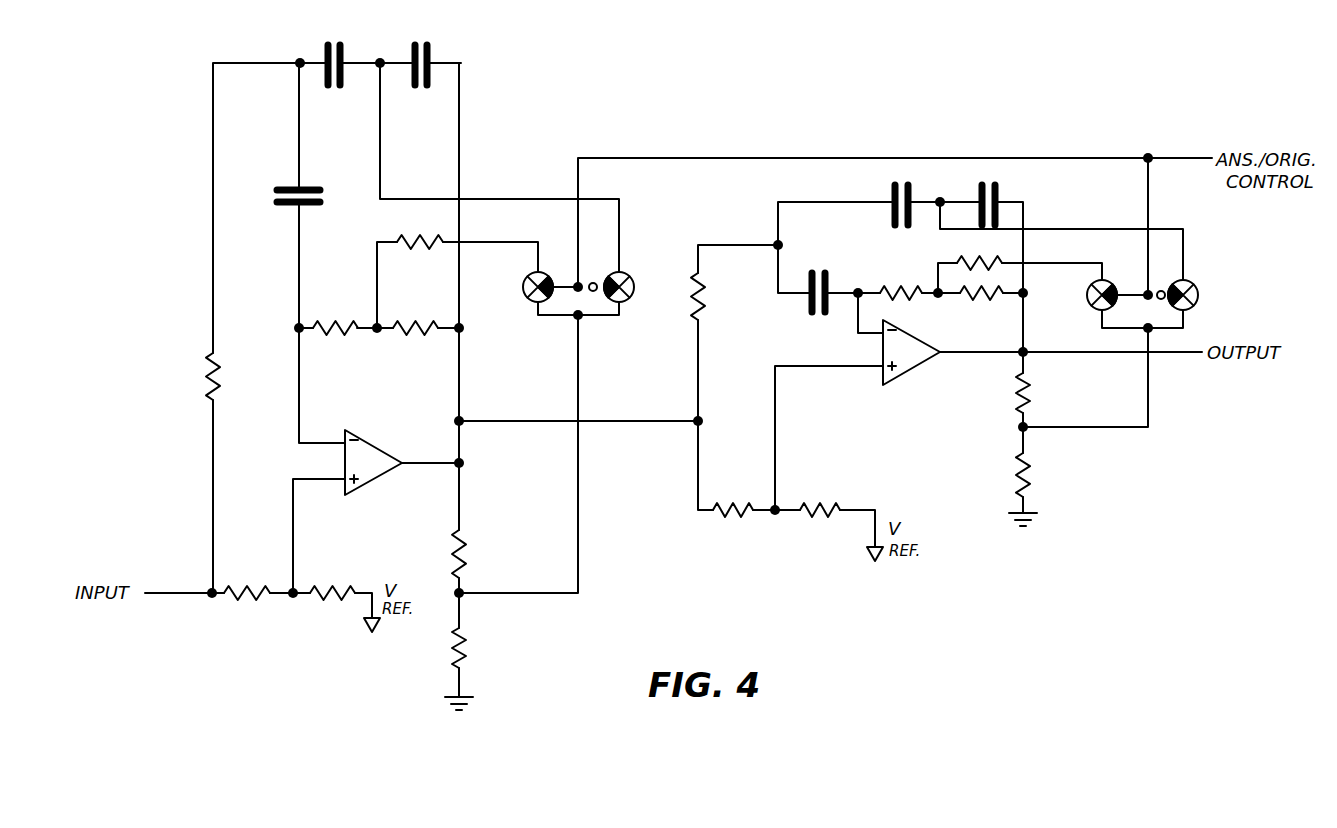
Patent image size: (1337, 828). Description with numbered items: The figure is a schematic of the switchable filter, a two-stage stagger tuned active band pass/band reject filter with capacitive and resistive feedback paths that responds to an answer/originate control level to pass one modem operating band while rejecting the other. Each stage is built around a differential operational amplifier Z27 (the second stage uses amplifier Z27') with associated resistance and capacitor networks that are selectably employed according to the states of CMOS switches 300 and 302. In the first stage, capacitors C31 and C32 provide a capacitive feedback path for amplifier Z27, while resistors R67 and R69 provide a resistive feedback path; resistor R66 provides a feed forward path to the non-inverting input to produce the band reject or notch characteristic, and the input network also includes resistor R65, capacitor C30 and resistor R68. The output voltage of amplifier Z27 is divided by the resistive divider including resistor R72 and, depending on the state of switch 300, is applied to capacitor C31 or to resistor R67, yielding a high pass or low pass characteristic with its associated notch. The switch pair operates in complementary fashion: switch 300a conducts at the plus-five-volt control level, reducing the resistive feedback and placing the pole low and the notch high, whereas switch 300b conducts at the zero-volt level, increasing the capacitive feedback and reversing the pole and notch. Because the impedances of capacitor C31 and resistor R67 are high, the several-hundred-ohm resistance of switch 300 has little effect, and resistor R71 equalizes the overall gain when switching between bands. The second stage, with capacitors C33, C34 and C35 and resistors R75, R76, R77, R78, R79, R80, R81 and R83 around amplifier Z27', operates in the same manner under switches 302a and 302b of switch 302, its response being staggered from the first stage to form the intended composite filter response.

The capacitor C30 is at (307, 184).
The capacitor C31 is at (333, 54).
The capacitor C32 is at (420, 54).
The capacitor C33 is at (817, 280).
The capacitor C34 is at (897, 195).
The capacitor C35 is at (985, 195).
The resistor R65 is at (234, 376).
The resistor R66 is at (247, 582).
The resistor R67 is at (335, 318).
The resistor R68 is at (332, 582).
The resistor R69 is at (415, 318).
The resistor R71 is at (420, 232).
The resistor R72 is at (477, 599).
The resistor R75 is at (719, 296).
The resistor R76 is at (732, 500).
The resistor R77 is at (897, 283).
The resistor R78 is at (819, 500).
The resistor R79 is at (979, 305).
The resistor R80 is at (1044, 475).
The resistor R81 is at (978, 253).
The resistor R83 is at (1043, 393).
The differential operational amplifier Z27 is at (642, 407).
The CMOS switch 300 is at (574, 255).
The switch 300a is at (533, 272).
The switch 300b is at (599, 250).
The CMOS switch 302 is at (1142, 288).
The switch 302a is at (1092, 308).
The switch 302b is at (1194, 308).